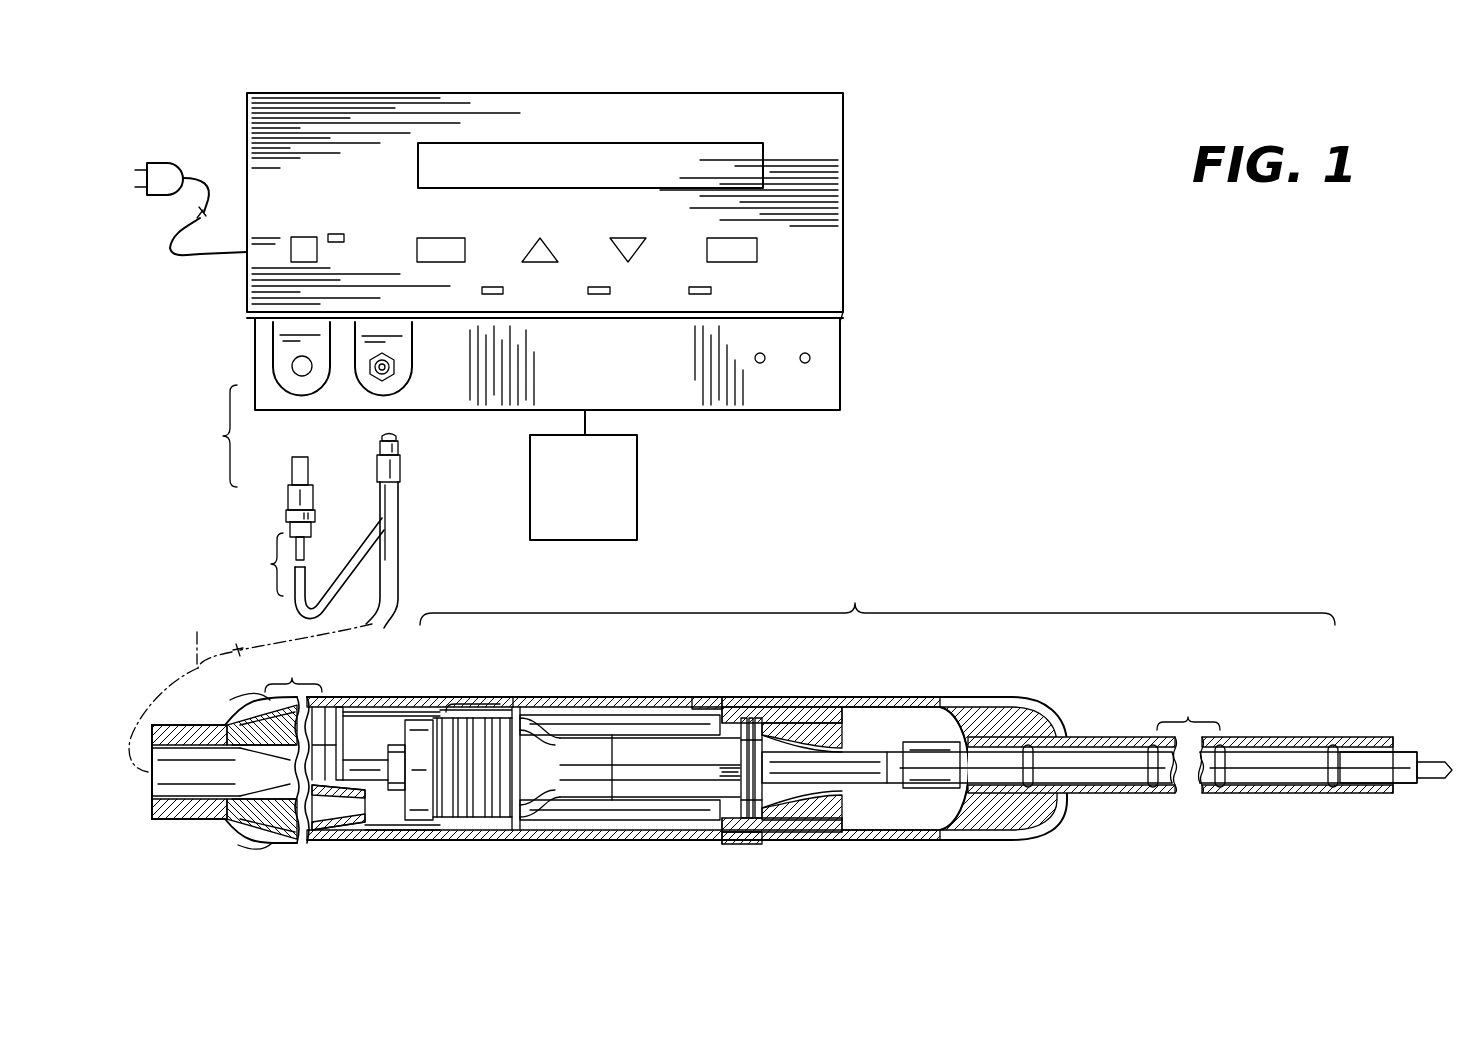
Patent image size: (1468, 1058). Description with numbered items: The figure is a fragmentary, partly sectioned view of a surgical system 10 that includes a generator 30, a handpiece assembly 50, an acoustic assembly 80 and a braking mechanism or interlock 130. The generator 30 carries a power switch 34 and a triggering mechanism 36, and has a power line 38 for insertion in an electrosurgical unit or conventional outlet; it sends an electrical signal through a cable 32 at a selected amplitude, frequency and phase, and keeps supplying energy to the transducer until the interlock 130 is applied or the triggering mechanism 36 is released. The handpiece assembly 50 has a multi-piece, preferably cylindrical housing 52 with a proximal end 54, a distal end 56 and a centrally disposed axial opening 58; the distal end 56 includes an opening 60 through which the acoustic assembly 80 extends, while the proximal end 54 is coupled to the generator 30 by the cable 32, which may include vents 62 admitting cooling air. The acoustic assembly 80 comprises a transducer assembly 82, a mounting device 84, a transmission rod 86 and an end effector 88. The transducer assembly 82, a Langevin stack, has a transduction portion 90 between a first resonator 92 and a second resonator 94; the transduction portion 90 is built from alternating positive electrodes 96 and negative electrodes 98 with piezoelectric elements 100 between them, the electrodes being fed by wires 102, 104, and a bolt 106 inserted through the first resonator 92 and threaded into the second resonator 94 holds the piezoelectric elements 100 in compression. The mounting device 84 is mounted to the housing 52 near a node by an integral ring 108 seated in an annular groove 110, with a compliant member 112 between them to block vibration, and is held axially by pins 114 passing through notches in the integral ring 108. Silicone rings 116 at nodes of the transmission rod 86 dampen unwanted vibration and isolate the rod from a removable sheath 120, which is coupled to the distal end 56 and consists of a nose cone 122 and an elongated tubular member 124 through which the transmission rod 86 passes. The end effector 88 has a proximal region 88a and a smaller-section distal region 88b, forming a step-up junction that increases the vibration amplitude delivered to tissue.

The surgical system 10 is at (994, 276).
The generator 30 is at (843, 150).
The cable 32 is at (197, 632).
The power switch 34 is at (291, 251).
The triggering mechanism 36 is at (583, 475).
The power line 38 is at (208, 175).
The handpiece assembly 50 is at (794, 759).
The housing 52 is at (372, 700).
The proximal end 54 is at (214, 822).
The distal end 56 is at (766, 845).
The axial opening 58 is at (658, 812).
The opening 60 is at (841, 748).
The vents 62 is at (222, 745).
The acoustic assembly 80 is at (877, 599).
The transducer assembly 82 is at (520, 716).
The mounting device 84 is at (678, 734).
The transmission rod 86 is at (1117, 787).
The end effector 88 is at (1430, 782).
The proximal region 88a is at (1370, 785).
The distal region 88b is at (1440, 762).
The transduction portion 90 is at (487, 716).
The first resonator 92 is at (415, 802).
The second resonator 94 is at (553, 787).
The positive electrodes 96 is at (452, 822).
The negative electrodes 98 is at (436, 735).
The piezoelectric elements 100 is at (478, 826).
The wire 102 is at (352, 718).
The wire 104 is at (420, 840).
The bolt 106 is at (385, 836).
The integral ring 108 is at (760, 730).
The annular groove 110 is at (742, 826).
The compliant member 112 is at (744, 730).
The pins 114 is at (722, 768).
The silicone rings 116 is at (1150, 765).
The removable sheath 120 is at (1046, 733).
The nose cone 122 is at (998, 706).
The elongated tubular member 124 is at (1271, 795).
The braking mechanism 130 is at (932, 802).